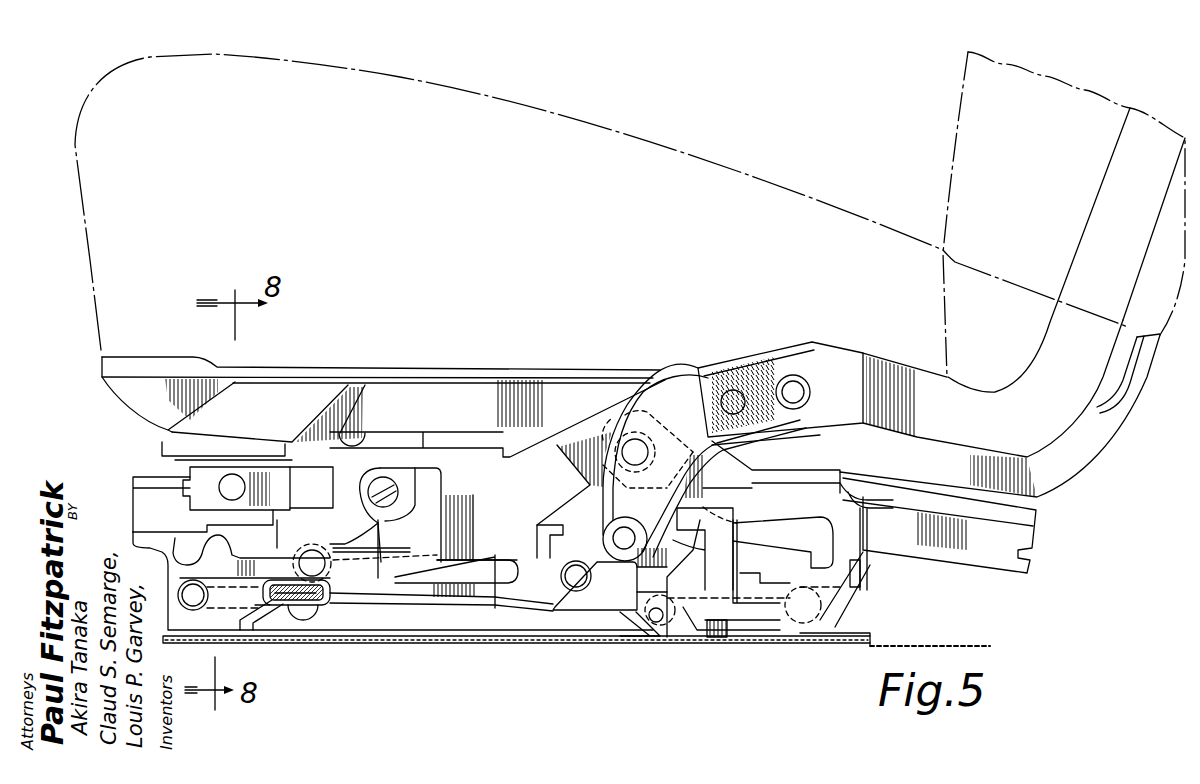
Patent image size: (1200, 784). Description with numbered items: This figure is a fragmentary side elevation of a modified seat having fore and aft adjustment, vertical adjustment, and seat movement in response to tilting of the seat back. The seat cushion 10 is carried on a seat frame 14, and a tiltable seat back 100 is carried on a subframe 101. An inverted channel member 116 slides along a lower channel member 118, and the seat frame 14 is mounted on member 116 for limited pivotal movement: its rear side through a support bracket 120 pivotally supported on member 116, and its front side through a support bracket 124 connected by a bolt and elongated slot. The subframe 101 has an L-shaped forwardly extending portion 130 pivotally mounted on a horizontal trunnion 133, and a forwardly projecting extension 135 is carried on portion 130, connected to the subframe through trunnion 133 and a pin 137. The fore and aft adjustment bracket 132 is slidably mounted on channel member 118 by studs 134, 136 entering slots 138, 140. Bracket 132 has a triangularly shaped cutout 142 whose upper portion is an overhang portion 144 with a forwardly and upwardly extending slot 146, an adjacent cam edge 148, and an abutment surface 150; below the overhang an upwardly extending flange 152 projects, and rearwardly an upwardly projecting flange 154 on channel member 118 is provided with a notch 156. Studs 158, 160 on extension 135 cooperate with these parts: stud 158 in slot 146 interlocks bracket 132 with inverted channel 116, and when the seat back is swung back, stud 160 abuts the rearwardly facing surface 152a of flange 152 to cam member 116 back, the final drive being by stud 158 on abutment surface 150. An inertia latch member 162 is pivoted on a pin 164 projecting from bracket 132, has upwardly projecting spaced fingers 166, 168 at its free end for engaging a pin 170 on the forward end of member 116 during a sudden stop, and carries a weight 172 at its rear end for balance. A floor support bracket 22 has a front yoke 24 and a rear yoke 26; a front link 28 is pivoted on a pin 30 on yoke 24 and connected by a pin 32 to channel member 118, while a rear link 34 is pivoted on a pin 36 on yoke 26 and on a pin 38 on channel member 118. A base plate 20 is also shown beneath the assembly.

The seat cushion 10 is at (420, 97).
The seat frame 14 is at (145, 393).
The base plate 20 is at (552, 648).
The floor support bracket 22 is at (453, 635).
The front yoke 24 is at (343, 626).
The rear yoke 26 is at (850, 627).
The front link 28 is at (266, 612).
The pin 30 is at (305, 612).
The pin 32 is at (203, 606).
The rear link 34 is at (706, 643).
The pin 36 is at (812, 635).
The pin 38 is at (658, 626).
The tiltable seat back 100 is at (972, 143).
The subframe 101 is at (1097, 380).
The inverted channel member 116 is at (1030, 537).
The channel member 118 is at (150, 497).
The support bracket 120 is at (820, 462).
The support bracket 124 is at (185, 437).
The L-shaped forwardly extending portion 130 is at (933, 427).
The fore and aft adjustment bracket 132 is at (490, 604).
The horizontal trunnion 133 is at (800, 378).
The stud 134 is at (340, 635).
The forwardly projecting extension 135 is at (647, 400).
The stud 136 is at (561, 582).
The pin 137 is at (733, 390).
The slot 138 is at (515, 578).
The slot 140 is at (760, 573).
The triangularly shaped cutout 142 is at (787, 527).
The overhang portion 144 is at (583, 478).
The slot 146 is at (656, 421).
The cam surface 148 is at (668, 460).
The abutment surface 150 is at (632, 497).
The flange 152 is at (583, 597).
The rearwardly facing surface 152a is at (583, 609).
The flange 154 is at (722, 533).
The notch 156 is at (693, 553).
The stud 158 is at (624, 452).
The stud 160 is at (315, 470).
The latch member 162 is at (277, 558).
The pin 164 is at (397, 493).
The finger 166 is at (176, 538).
The finger 168 is at (226, 551).
The pin 170 is at (272, 435).
The weight 172 is at (437, 515).